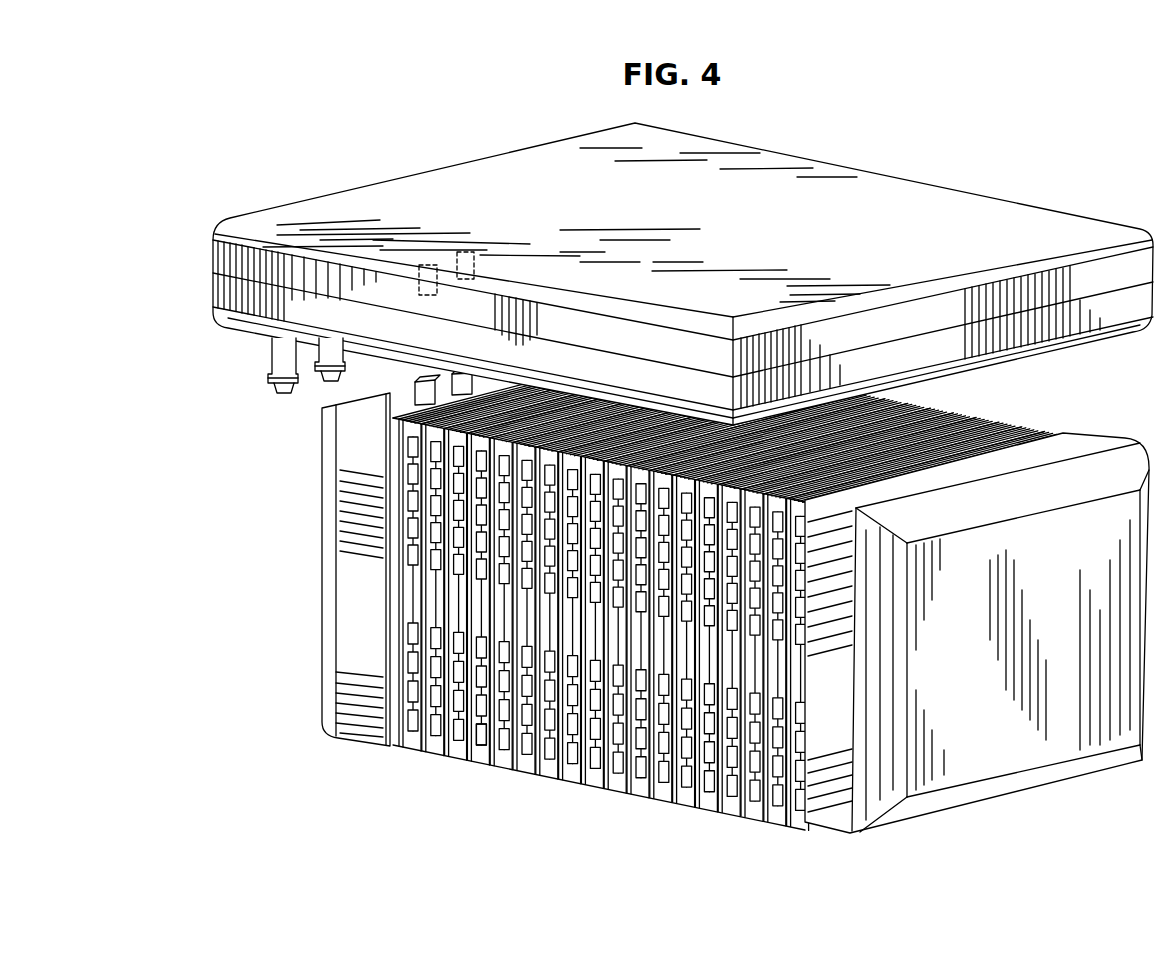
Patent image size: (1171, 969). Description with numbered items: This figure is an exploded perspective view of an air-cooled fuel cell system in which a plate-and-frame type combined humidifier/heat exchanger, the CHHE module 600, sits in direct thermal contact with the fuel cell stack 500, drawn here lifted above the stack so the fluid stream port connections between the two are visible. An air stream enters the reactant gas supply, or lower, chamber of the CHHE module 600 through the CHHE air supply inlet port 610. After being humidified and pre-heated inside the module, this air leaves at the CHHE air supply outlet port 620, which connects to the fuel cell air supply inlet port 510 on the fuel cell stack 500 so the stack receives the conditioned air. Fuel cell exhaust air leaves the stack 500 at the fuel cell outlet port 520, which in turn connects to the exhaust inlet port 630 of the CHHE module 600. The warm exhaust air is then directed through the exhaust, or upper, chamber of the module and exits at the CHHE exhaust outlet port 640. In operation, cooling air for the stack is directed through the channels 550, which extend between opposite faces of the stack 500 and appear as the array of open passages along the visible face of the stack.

The fuel cell stack 500 is at (392, 626).
The fuel cell air supply inlet port 510 is at (333, 402).
The fuel cell outlet port 520 is at (417, 382).
The channels 550 is at (477, 735).
The CHHE module 600 is at (428, 192).
The CHHE air supply inlet port 610 is at (270, 362).
The CHHE air supply outlet port 620 is at (460, 252).
The exhaust inlet port 630 is at (420, 266).
The CHHE exhaust outlet port 640 is at (318, 378).